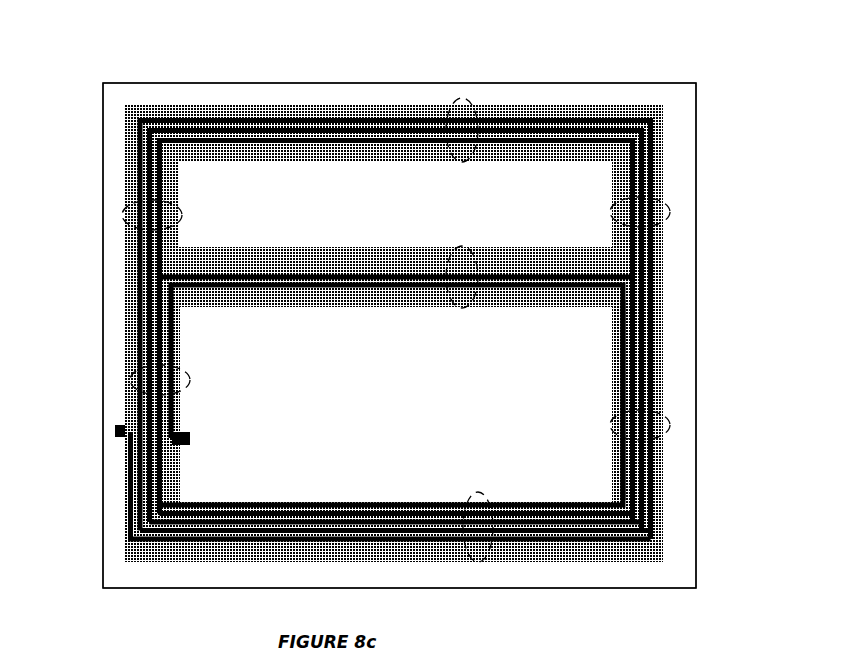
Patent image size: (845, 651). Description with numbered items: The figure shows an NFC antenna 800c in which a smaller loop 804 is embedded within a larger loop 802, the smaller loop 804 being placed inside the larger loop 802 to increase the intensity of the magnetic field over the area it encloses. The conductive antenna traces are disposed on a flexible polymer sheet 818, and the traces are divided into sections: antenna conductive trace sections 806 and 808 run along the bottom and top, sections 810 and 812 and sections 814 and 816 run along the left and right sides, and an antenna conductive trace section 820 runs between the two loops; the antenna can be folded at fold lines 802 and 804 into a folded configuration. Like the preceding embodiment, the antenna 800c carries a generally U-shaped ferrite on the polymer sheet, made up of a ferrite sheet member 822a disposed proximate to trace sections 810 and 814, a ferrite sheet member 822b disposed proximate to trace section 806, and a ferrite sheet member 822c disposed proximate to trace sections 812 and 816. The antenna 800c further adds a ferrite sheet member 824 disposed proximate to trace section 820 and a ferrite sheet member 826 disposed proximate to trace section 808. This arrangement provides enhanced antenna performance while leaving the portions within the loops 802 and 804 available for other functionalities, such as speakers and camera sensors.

The antenna 800c is at (208, 73).
The larger loop 802 is at (86, 277).
The smaller loop 804 is at (86, 140).
The antenna conductive trace section 806 is at (487, 562).
The antenna conductive trace section 808 is at (470, 100).
The antenna conductive trace section 810 is at (130, 378).
The antenna conductive trace section 812 is at (672, 424).
The antenna conductive trace section 814 is at (122, 214).
The antenna conductive trace section 816 is at (672, 210).
The flexible polymer sheet 818 is at (697, 525).
The antenna conductive trace section 820 is at (465, 310).
The ferrite sheet member 822a is at (177, 485).
The ferrite sheet member 822b is at (425, 510).
The ferrite sheet member 822c is at (612, 468).
The ferrite sheet member 824 is at (248, 308).
The ferrite sheet member 826 is at (215, 163).